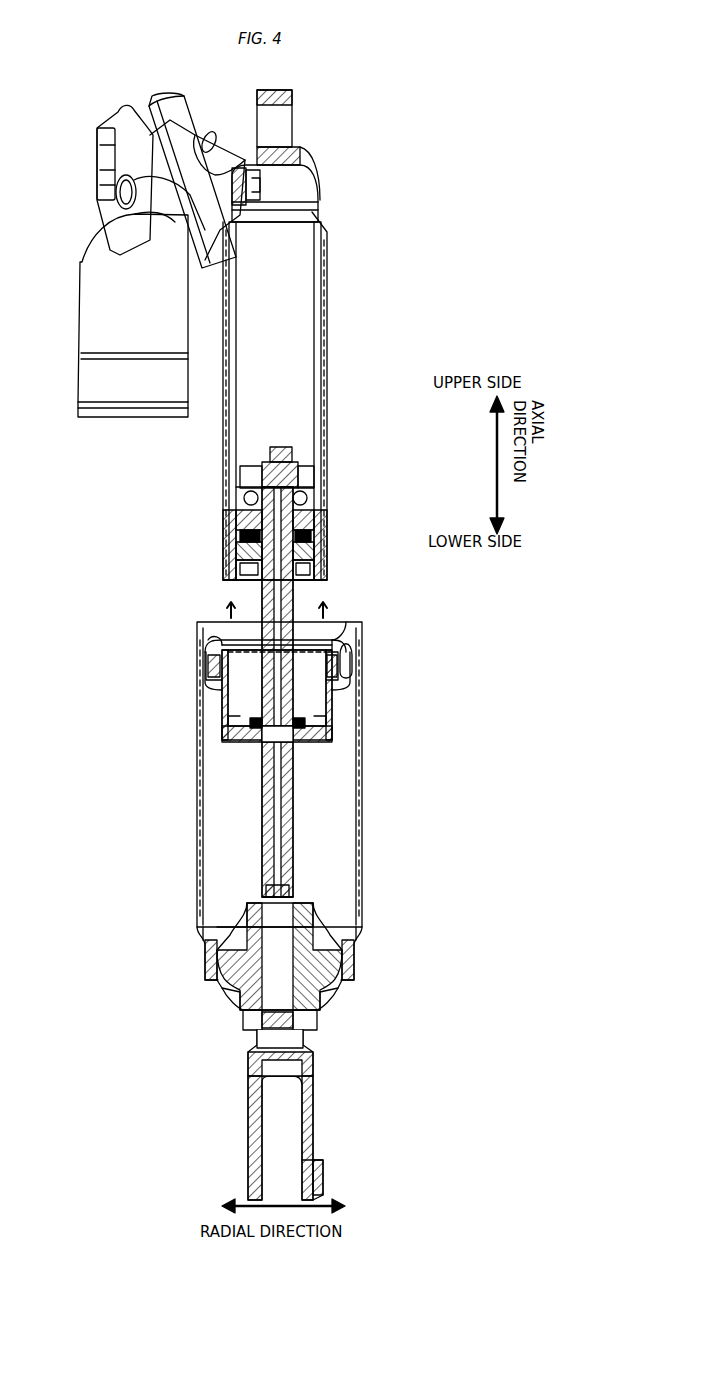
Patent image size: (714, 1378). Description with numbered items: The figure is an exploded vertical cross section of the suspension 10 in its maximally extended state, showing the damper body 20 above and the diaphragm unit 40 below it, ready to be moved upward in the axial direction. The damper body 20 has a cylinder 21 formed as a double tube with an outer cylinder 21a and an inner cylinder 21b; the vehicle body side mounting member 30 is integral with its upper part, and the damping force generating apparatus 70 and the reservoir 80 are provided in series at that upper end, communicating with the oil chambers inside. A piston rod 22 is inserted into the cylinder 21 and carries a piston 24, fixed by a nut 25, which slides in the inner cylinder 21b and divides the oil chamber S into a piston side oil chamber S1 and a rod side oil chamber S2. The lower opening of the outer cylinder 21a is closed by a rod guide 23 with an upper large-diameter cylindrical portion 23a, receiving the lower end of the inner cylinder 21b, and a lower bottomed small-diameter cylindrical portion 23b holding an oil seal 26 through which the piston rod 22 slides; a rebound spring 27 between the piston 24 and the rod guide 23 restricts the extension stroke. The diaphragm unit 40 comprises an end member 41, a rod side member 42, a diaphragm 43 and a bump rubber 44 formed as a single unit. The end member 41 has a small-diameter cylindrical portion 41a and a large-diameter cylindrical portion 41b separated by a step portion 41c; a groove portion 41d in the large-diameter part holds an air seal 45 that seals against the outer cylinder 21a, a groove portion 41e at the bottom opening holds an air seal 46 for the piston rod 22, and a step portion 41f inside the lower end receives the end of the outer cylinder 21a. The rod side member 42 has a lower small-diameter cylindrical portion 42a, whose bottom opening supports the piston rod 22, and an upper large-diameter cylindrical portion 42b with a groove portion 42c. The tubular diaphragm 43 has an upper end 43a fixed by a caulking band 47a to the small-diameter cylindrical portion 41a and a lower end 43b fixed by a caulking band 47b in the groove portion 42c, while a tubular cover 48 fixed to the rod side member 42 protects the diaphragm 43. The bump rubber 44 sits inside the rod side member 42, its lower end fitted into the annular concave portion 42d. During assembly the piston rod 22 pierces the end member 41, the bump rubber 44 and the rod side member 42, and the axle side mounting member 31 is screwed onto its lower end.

The suspension 10 is at (397, 128).
The damper body 20 is at (434, 367).
The cylinder 21 is at (395, 268).
The outer cylinder 21a is at (323, 270).
The inner cylinder 21b is at (324, 290).
The piston rod 22 is at (293, 598).
The rod guide 23 is at (389, 544).
The large-diameter cylindrical portion 23a is at (320, 553).
The small-diameter cylindrical portion 23b is at (318, 568).
The piston 24 is at (310, 476).
The nut 25 is at (300, 455).
The oil seal 26 is at (230, 556).
The rebound spring 27 is at (328, 528).
The vehicle body side mounting member 30 is at (293, 100).
The axle side mounting member 31 is at (316, 1166).
The diaphragm unit 40 is at (135, 730).
The end member 41 is at (143, 664).
The small-diameter cylindrical portion 41a is at (212, 655).
The large-diameter cylindrical portion 41b is at (208, 644).
The step portion 41c is at (215, 672).
The groove portion 41d is at (355, 634).
The groove portion 41e is at (250, 742).
The step portion 41f is at (222, 735).
The rod side member 42 is at (414, 945).
The small-diameter cylindrical portion 42a is at (340, 1000).
The large-diameter cylindrical portion 42b is at (350, 963).
The groove portion 42c is at (355, 946).
The annular concave portion 42d is at (250, 1018).
The diaphragm 43 is at (200, 752).
The upper end 43a is at (222, 700).
The lower end 43b is at (208, 962).
The bump rubber 44 is at (240, 995).
The air seal 45 is at (348, 653).
The air seal 46 is at (300, 742).
The caulking band 47a is at (218, 686).
The caulking band 47b is at (208, 945).
The cover 48 is at (200, 816).
The damping force generating apparatus 70 is at (123, 111).
The reservoir 80 is at (105, 298).
The oil chamber S is at (165, 437).
The piston side oil chamber S1 is at (248, 442).
The rod side oil chamber S2 is at (244, 497).